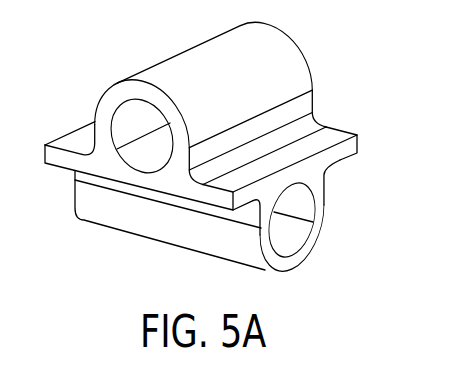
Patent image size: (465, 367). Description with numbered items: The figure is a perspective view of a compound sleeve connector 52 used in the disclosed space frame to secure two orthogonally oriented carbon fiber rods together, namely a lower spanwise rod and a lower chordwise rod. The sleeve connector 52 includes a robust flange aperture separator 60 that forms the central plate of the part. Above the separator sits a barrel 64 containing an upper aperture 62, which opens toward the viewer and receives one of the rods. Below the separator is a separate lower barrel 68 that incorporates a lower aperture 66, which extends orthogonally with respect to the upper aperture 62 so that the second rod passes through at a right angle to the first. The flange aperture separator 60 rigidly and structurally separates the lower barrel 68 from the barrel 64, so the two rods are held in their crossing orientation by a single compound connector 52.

The sleeve connector 52 is at (330, 60).
The flange aperture separator 60 is at (348, 148).
The upper aperture 62 is at (124, 124).
The barrel 64 is at (182, 65).
The lower aperture 66 is at (288, 241).
The lower barrel 68 is at (165, 230).